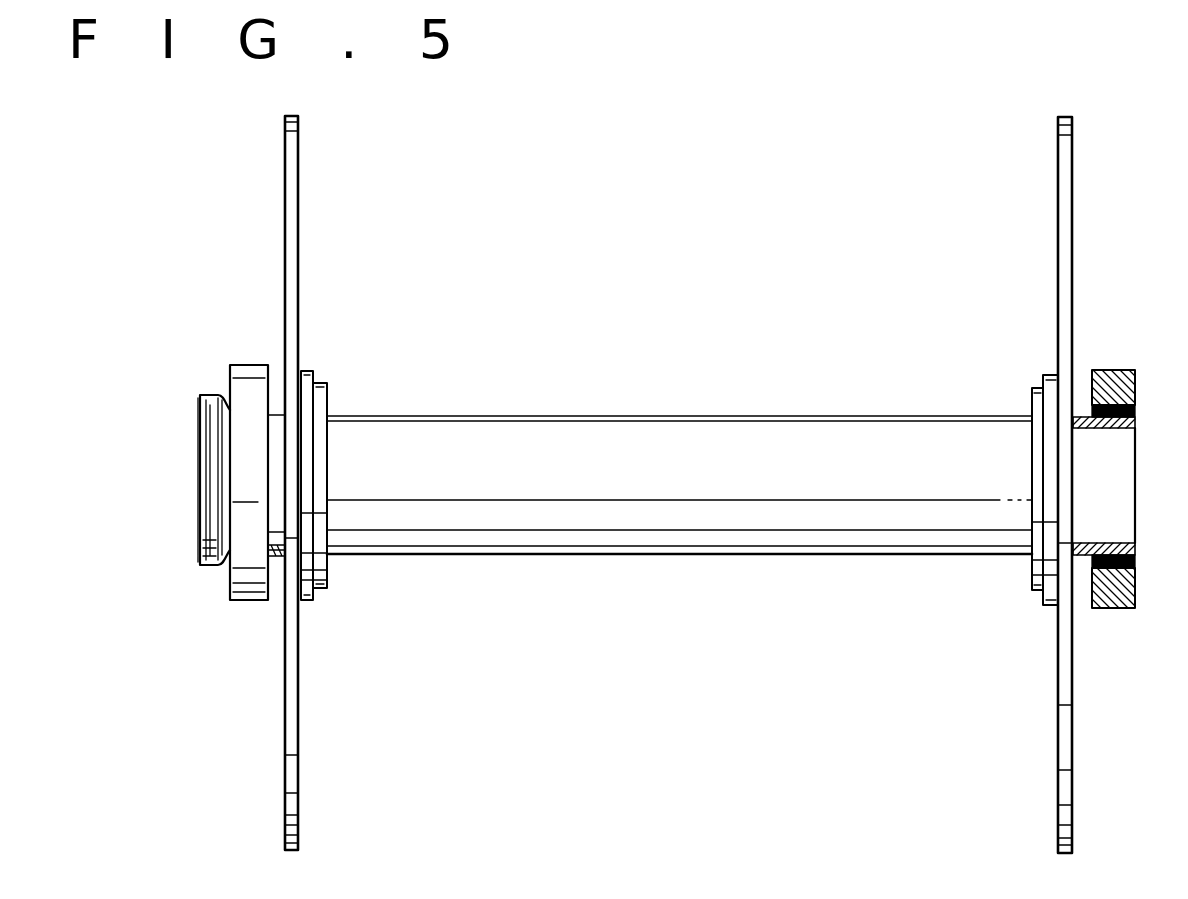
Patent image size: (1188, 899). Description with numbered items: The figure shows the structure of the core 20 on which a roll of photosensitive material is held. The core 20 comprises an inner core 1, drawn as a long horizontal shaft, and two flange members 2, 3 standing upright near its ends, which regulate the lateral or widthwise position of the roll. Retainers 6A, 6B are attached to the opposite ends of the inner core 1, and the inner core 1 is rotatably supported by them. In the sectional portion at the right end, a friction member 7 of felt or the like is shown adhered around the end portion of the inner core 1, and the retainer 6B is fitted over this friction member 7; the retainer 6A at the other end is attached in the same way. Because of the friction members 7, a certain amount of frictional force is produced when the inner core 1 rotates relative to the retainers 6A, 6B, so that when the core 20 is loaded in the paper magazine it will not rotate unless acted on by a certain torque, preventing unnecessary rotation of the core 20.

The inner core 1 is at (834, 436).
The flange member 2 is at (299, 178).
The flange member 3 is at (1073, 158).
The retainer 6A is at (240, 368).
The retainer 6B is at (1120, 372).
The friction member 7 is at (1135, 398).
The core 20 is at (855, 205).